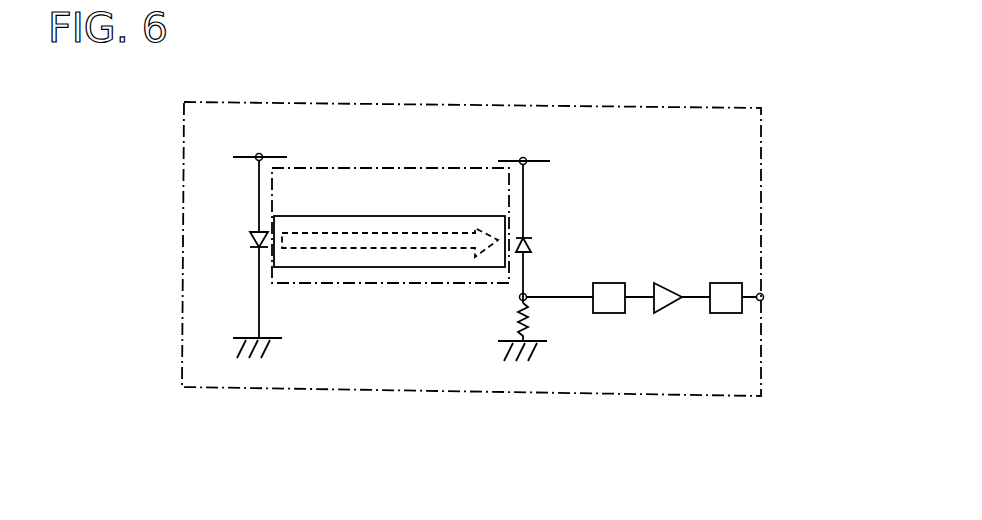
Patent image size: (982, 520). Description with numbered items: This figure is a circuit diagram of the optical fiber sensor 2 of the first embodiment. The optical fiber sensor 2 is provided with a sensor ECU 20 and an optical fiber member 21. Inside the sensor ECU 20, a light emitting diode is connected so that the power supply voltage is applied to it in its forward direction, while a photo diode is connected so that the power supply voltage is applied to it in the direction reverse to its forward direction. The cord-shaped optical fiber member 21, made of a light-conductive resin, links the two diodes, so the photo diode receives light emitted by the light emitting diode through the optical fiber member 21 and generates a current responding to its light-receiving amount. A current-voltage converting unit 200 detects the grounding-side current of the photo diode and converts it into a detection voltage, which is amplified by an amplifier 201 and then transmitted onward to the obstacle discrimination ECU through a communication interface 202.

The optical fiber sensor 2 is at (670, 66).
The sensor ECU 20 is at (246, 388).
The optical fiber member 21 is at (390, 216).
The current-voltage converting unit 200 is at (608, 313).
The amplifier 201 is at (668, 283).
The communication I/F 202 is at (725, 313).